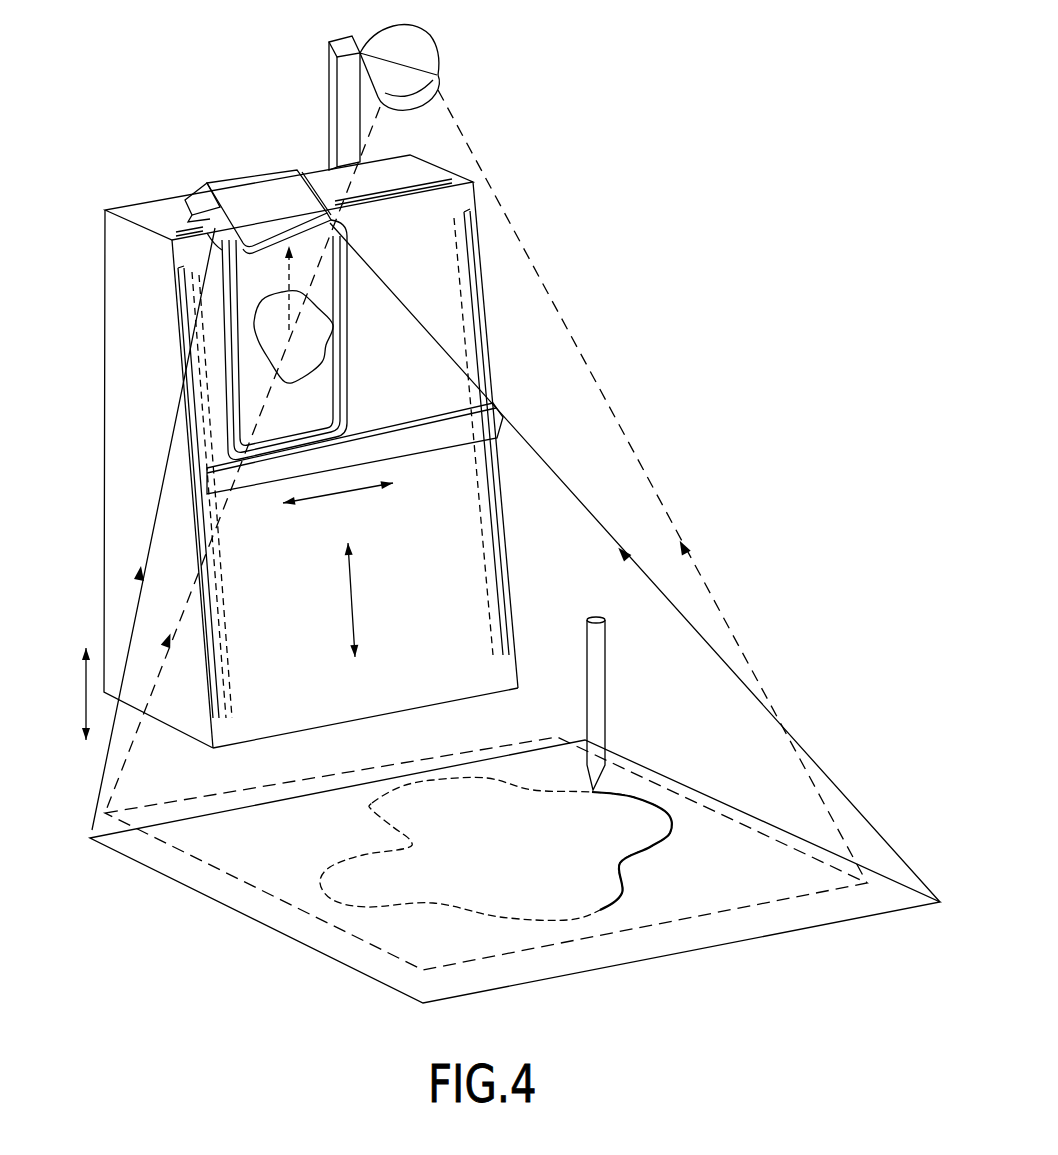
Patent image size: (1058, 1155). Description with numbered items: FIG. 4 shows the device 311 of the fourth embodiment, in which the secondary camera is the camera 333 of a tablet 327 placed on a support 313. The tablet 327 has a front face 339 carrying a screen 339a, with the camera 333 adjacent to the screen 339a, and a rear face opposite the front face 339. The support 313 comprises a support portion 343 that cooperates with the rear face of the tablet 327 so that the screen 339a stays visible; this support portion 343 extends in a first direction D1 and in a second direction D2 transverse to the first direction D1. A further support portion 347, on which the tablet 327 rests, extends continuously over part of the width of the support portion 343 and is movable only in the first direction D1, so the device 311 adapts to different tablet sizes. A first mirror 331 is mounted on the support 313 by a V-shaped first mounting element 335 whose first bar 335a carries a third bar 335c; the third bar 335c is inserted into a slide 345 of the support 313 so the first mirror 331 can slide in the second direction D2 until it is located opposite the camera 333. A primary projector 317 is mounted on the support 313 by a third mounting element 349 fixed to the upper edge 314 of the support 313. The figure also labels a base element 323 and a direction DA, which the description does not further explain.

The device 311 is at (530, 103).
The support 313 is at (125, 553).
The upper edge 314 is at (323, 177).
The primary projector 317 is at (420, 92).
The platform 323 is at (750, 820).
The tablet 327 is at (223, 310).
The first mirror 331 is at (207, 233).
The camera 333 is at (332, 223).
The first mounting element 335 is at (243, 170).
The first bar 335a is at (190, 193).
The third bar 335c is at (200, 213).
The front face 339 is at (243, 330).
The screen 339a is at (320, 380).
The support portion 343 is at (273, 660).
The slide 345 is at (443, 165).
The support portion 347 is at (430, 440).
The third mounting element 349 is at (346, 42).
The first direction D1 is at (337, 600).
The second direction D2 is at (338, 503).
The axial direction DA is at (74, 694).